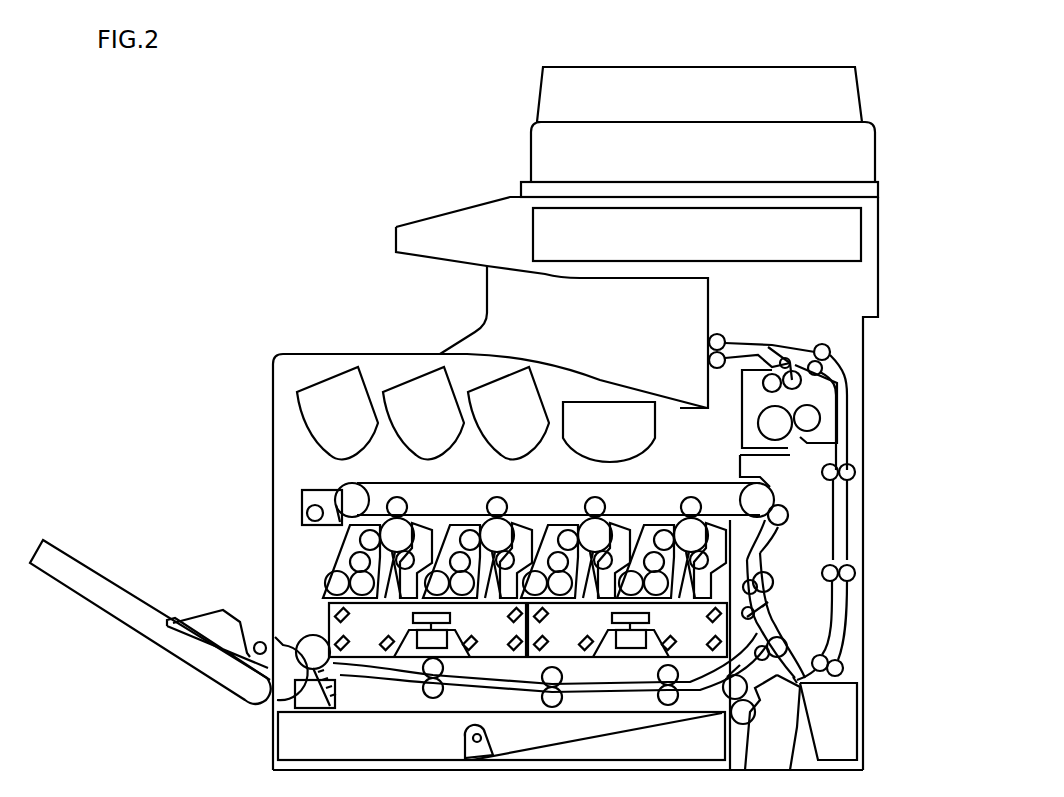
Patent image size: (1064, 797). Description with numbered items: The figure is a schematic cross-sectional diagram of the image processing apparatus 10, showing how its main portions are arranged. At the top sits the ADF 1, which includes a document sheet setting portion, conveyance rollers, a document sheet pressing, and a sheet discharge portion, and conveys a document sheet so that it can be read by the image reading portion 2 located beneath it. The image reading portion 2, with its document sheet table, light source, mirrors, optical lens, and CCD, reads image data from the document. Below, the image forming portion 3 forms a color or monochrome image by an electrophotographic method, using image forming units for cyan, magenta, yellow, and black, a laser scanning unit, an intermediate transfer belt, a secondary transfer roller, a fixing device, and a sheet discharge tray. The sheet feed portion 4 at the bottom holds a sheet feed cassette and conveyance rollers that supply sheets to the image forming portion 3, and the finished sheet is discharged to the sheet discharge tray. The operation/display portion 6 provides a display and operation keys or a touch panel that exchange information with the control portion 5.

The image processing apparatus 10 is at (265, 117).
The ADF (Automatic Document Feeder) 1 is at (869, 110).
The image reading portion 2 is at (869, 237).
The image forming portion 3 is at (292, 379).
The sheet feed portion 4 is at (277, 738).
The control portion 5 is at (169, 622).
The operation/display portion 6 is at (436, 206).